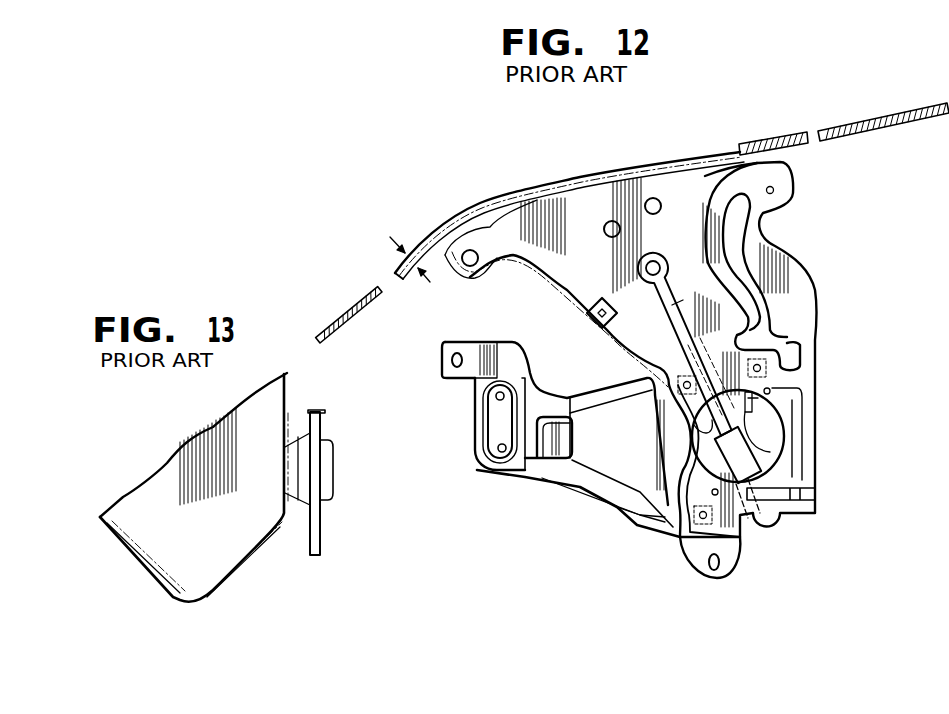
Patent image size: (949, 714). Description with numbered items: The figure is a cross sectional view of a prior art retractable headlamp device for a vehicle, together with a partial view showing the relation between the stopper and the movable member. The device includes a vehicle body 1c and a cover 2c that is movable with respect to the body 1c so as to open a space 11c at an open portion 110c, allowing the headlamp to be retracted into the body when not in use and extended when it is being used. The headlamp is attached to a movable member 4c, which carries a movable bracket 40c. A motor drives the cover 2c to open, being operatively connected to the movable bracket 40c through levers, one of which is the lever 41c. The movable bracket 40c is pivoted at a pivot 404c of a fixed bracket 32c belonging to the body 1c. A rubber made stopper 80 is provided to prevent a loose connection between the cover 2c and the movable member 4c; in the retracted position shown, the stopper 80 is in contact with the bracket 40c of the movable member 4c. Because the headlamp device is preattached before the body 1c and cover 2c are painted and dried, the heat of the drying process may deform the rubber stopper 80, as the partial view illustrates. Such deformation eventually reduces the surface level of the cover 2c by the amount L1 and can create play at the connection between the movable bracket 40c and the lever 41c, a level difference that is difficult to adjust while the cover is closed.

In FIG. 12, the vehicle body 1c is at (352, 315).
In FIG. 12, the cover 2c is at (767, 140).
In FIG. 12, the movable member 4c is at (623, 352).
In FIG. 13, the movable member 4c is at (133, 563).
In FIG. 12, the space 11c is at (470, 308).
In FIG. 12, the fixed bracket 32c is at (800, 377).
In FIG. 12, the movable bracket 40c is at (582, 273).
In FIG. 13, the movable bracket 40c is at (273, 477).
In FIG. 12, the lever 41c is at (707, 420).
In FIG. 12, the rubber made stopper 80 is at (745, 417).
In FIG. 13, the rubber made stopper 80 is at (302, 493).
In FIG. 12, the open portion 110c is at (410, 288).
In FIG. 12, the pivot 404c is at (775, 190).
In FIG. 12, the reduction in surface level L1 is at (417, 255).